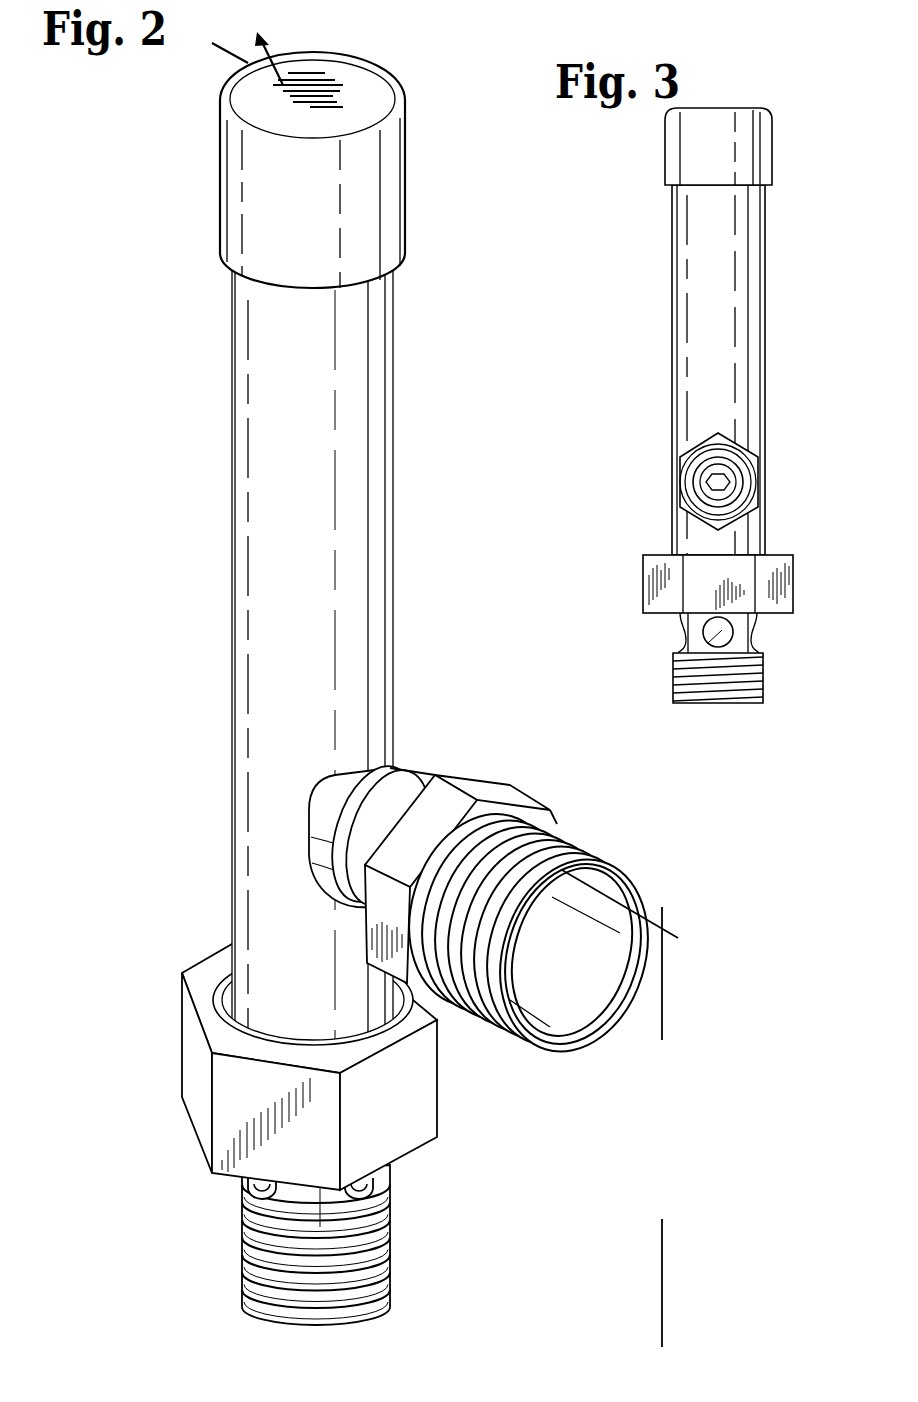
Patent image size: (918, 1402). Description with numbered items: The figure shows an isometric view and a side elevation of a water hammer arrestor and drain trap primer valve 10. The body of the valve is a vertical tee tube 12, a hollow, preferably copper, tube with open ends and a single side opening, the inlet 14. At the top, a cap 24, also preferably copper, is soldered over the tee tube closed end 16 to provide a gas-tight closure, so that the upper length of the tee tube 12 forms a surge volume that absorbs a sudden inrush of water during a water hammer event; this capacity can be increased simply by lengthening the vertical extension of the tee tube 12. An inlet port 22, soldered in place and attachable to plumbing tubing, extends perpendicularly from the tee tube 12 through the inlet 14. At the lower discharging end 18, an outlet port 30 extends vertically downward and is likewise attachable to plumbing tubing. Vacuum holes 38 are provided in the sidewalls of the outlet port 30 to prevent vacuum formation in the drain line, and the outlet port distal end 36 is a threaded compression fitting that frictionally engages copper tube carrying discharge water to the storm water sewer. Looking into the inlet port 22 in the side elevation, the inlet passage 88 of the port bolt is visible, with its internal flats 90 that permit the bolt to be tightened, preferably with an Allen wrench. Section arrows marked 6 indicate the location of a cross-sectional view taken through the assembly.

In FIG. 2, the section line for FIG. 6 is at (247, 47).
In FIG. 2, the water hammer arrestor and drain trap primer valve 10 is at (160, 478).
In FIG. 3, the water hammer arrestor and drain trap primer valve 10 is at (866, 235).
In FIG. 2, the tee tube 12 is at (377, 395).
In FIG. 3, the tee tube 12 is at (753, 305).
In FIG. 2, the inlet 14 is at (397, 780).
In FIG. 2, the closed end 16 is at (200, 179).
In FIG. 2, the discharging end 18 is at (184, 945).
In FIG. 2, the inlet port 22 is at (488, 787).
In FIG. 3, the inlet port 22 is at (758, 492).
In FIG. 2, the cap 24 is at (388, 190).
In FIG. 3, the cap 24 is at (760, 152).
In FIG. 2, the outlet port 30 is at (415, 1080).
In FIG. 3, the outlet port 30 is at (787, 585).
In FIG. 2, the outlet port distal end 36 is at (372, 1312).
In FIG. 3, the outlet port distal end 36 is at (718, 678).
In FIG. 2, the vacuum holes 38 is at (250, 1182).
In FIG. 3, the vacuum holes 38 is at (722, 633).
In FIG. 3, the inlet passage 88 is at (722, 482).
In FIG. 3, the internal flats 90 is at (708, 483).